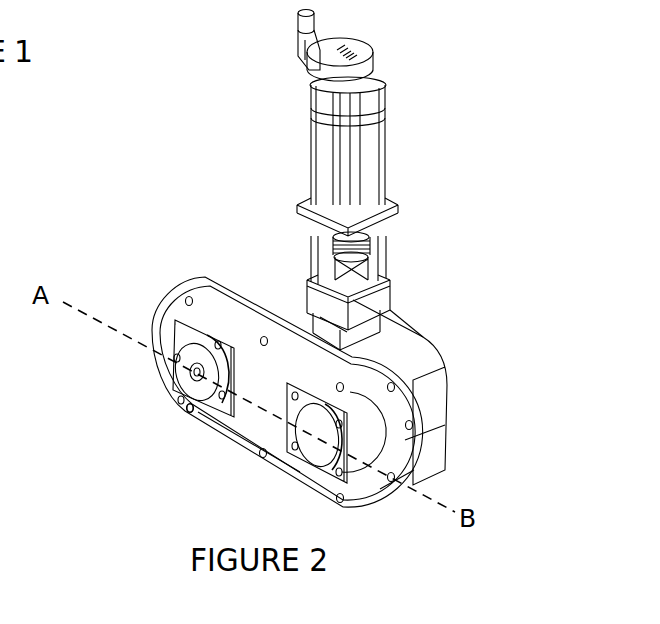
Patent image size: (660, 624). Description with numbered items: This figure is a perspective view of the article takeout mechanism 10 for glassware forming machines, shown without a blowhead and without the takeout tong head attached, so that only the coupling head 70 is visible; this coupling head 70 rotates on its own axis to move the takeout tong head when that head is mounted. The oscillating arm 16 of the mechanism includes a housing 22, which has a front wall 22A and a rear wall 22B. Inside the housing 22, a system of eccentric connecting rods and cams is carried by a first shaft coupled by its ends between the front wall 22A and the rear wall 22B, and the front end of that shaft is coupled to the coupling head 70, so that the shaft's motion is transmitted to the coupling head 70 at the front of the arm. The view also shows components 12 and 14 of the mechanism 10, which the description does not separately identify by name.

The article takeout mechanism 10 is at (277, 259).
The gearbox housing 12 is at (424, 376).
The motor 14 is at (383, 127).
The oscillating arm 16 is at (148, 296).
The housing 22 is at (385, 450).
The front wall 22A is at (231, 425).
The rear wall 22B is at (252, 298).
The coupling head 70 is at (173, 385).